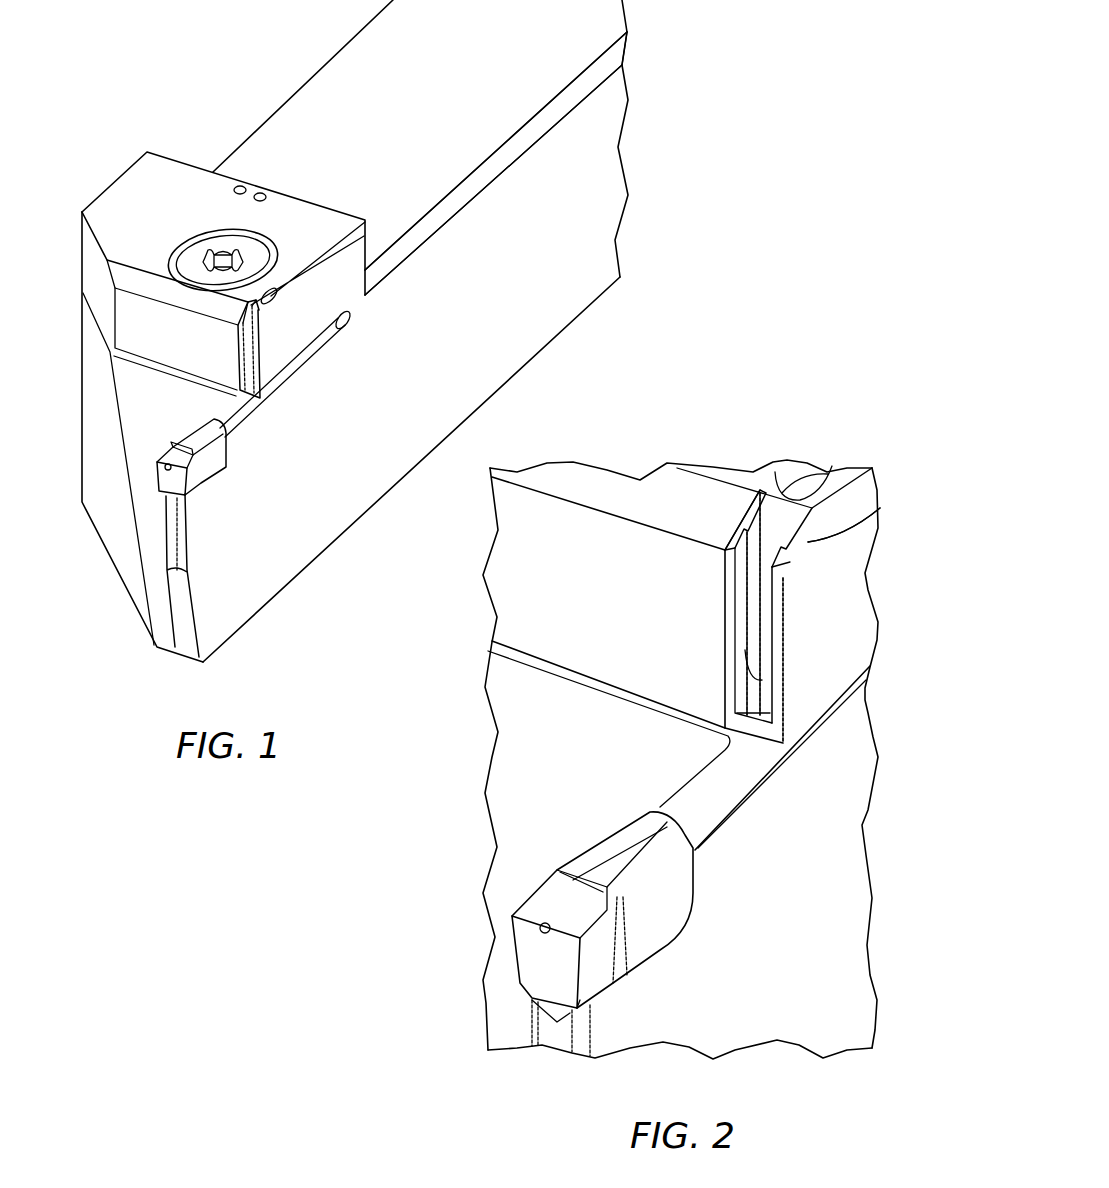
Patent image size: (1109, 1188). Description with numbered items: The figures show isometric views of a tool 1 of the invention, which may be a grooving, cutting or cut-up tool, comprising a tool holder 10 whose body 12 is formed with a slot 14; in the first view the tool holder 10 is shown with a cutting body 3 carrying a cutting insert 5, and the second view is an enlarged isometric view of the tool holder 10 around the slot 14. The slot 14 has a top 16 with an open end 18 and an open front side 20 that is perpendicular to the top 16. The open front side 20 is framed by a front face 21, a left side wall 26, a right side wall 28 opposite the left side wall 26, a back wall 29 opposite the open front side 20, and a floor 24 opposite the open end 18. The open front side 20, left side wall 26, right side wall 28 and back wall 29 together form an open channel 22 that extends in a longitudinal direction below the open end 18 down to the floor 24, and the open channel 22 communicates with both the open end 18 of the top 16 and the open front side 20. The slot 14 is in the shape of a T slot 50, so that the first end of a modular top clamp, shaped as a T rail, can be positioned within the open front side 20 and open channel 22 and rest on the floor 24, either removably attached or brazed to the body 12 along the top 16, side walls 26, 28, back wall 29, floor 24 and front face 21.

In FIG. 1, the tool 1 is at (663, 88).
In FIG. 2, the tool 1 is at (633, 455).
In FIG. 1, the cutting body 3 is at (212, 487).
In FIG. 2, the cutting body 3 is at (650, 962).
In FIG. 1, the cutting insert 5 is at (165, 480).
In FIG. 2, the cutting insert 5 is at (521, 970).
In FIG. 1, the tool holder 10 is at (373, 238).
In FIG. 2, the tool holder 10 is at (882, 608).
In FIG. 1, the body 12 is at (325, 295).
In FIG. 2, the body 12 is at (843, 588).
In FIG. 1, the slot 14 is at (264, 363).
In FIG. 2, the slot 14 is at (720, 617).
In FIG. 2, the top 16 is at (733, 513).
In FIG. 2, the open end 18 is at (782, 527).
In FIG. 2, the open front side 20 is at (757, 697).
In FIG. 2, the front face 21 is at (778, 668).
In FIG. 2, the open channel 22 is at (765, 627).
In FIG. 2, the floor 24 is at (731, 740).
In FIG. 2, the left side wall 26 is at (743, 517).
In FIG. 2, the right side wall 28 is at (860, 518).
In FIG. 2, the back wall 29 is at (806, 492).
In FIG. 2, the T slot 50 is at (728, 537).